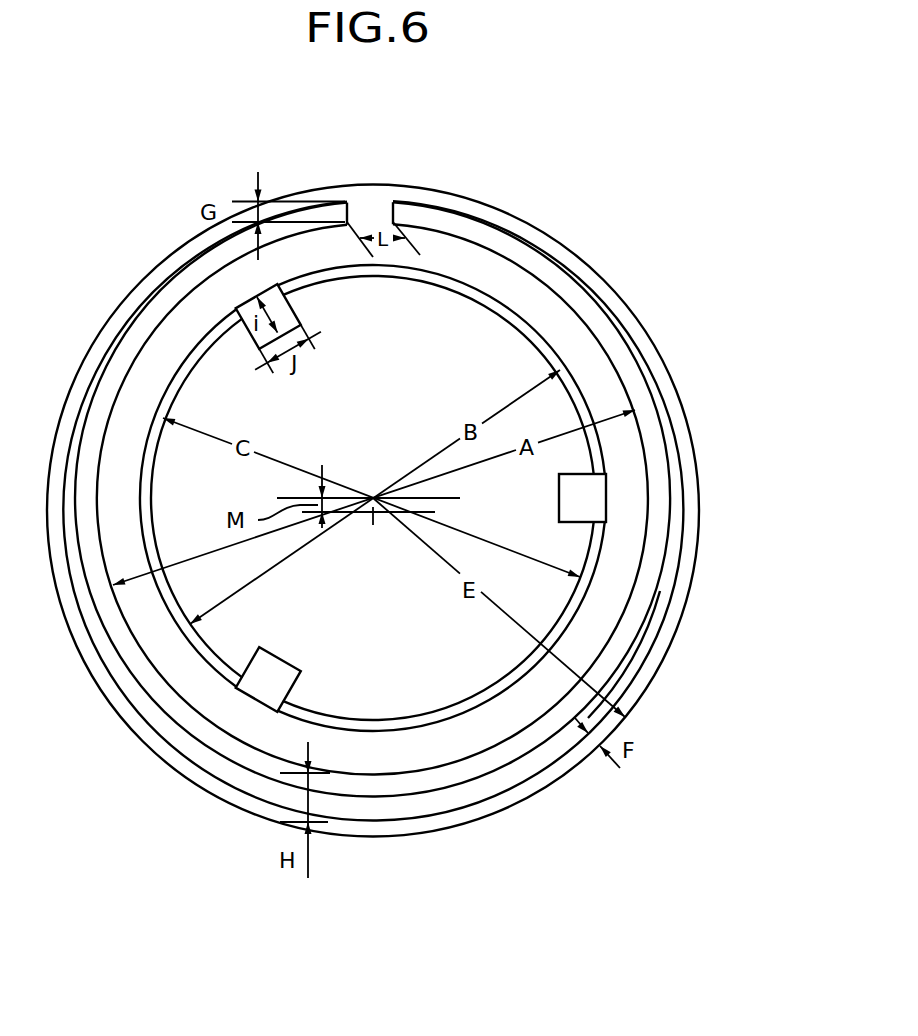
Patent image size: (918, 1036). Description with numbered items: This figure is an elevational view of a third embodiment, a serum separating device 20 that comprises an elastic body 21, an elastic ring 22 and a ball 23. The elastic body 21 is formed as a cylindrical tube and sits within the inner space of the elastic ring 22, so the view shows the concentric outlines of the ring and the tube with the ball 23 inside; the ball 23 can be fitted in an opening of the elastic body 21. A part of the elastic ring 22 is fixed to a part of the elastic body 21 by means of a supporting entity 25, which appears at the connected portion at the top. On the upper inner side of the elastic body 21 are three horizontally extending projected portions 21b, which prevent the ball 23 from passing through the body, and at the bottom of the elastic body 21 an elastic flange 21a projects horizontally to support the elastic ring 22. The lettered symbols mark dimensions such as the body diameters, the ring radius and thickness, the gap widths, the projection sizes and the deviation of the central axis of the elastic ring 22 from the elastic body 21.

The serum separating device 20 is at (373, 556).
The elastic body 21 is at (450, 820).
The elastic flange 21a is at (628, 638).
The projected portions 21b is at (578, 474).
The elastic ring 22 is at (447, 740).
The ball 23 is at (393, 690).
The supporting entity 25 is at (404, 207).